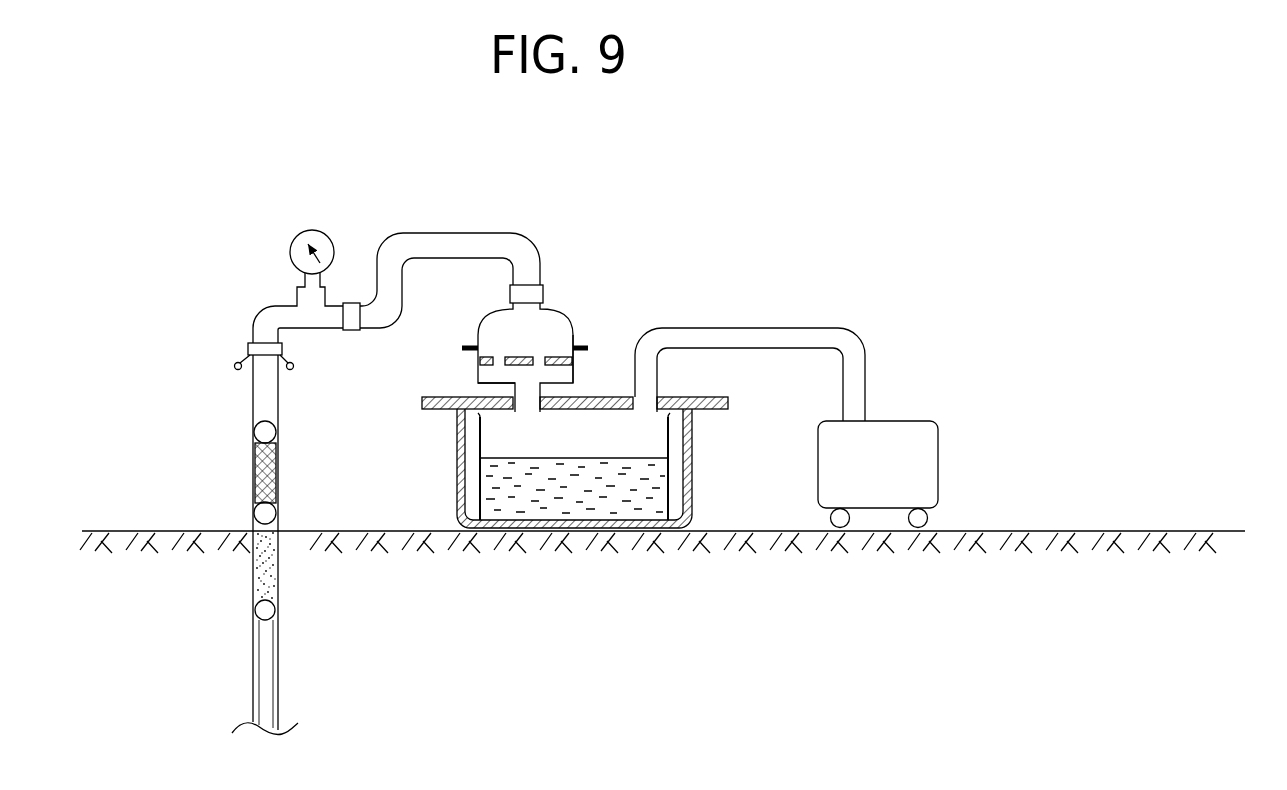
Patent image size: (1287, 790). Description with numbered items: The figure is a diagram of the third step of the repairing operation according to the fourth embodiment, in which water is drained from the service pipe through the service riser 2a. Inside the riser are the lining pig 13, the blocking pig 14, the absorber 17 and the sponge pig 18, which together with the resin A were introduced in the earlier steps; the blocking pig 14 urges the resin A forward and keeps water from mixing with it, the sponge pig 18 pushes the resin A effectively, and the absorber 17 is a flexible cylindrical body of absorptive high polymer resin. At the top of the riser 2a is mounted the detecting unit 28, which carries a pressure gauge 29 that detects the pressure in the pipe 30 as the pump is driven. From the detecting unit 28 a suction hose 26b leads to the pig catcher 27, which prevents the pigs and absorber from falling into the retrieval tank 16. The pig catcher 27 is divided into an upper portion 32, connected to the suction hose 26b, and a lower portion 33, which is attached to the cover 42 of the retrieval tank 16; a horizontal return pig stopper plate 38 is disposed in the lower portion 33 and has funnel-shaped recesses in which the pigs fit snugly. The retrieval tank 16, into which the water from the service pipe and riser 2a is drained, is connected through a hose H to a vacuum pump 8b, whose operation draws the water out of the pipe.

The service riser 2a is at (278, 585).
The lining pig 13 is at (258, 608).
The blocking pig 14 is at (258, 428).
The absorber 17 is at (254, 475).
The sponge pig 18 is at (258, 510).
The resin A is at (254, 552).
The detecting unit 28 is at (260, 298).
The pressure gauge 29 is at (310, 230).
The pipe 30 is at (318, 330).
The suction hose 26b is at (430, 233).
The pig catcher 27 is at (560, 305).
The upper portion 32 is at (571, 320).
The return pig stopper plate 38 is at (552, 357).
The lower portion 33 is at (480, 370).
The cover 42 is at (676, 396).
The retrieval tank 16 is at (752, 399).
The hose H is at (798, 328).
The vacuum pump 8b is at (877, 503).